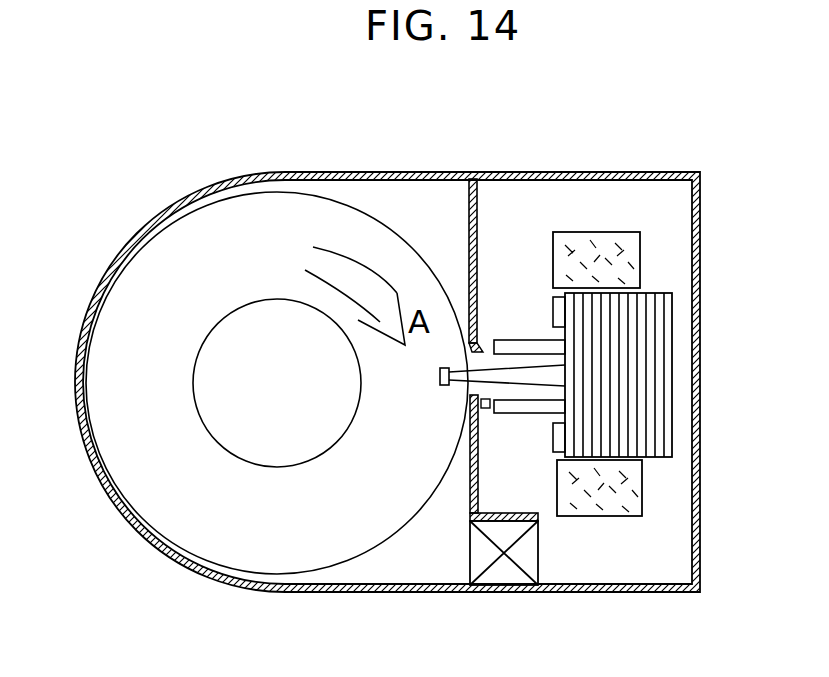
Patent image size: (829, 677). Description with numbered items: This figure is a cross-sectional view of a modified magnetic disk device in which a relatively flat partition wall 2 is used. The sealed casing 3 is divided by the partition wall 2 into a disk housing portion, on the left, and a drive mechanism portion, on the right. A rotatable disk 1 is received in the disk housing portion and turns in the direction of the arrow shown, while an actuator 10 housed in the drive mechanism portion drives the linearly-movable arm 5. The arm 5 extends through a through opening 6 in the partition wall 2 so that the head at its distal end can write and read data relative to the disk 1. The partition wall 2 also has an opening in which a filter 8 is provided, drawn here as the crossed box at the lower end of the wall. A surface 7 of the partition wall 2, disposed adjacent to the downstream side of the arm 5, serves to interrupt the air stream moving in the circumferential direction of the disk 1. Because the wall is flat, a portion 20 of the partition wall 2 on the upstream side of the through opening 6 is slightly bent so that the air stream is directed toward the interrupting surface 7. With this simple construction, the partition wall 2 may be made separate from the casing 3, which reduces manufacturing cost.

The disk 1 is at (170, 253).
The partition wall 2 is at (467, 262).
The casing 3 is at (205, 189).
The arm 5 is at (530, 372).
The through opening 6 is at (462, 359).
The interrupting surface 7 is at (486, 408).
The filter 8 is at (525, 553).
The actuator 10 is at (640, 258).
The bent portion of partition wall 20 is at (478, 342).